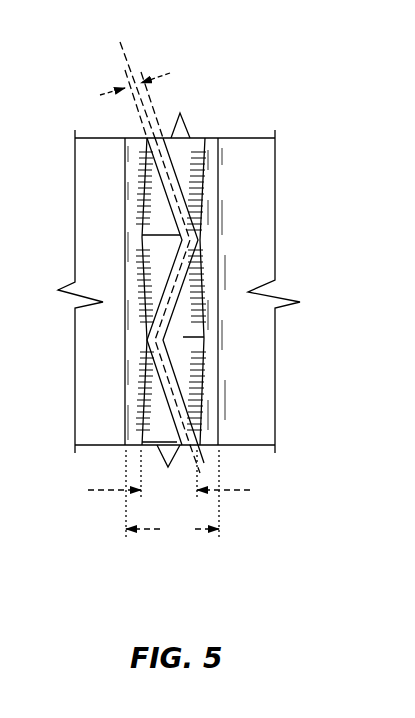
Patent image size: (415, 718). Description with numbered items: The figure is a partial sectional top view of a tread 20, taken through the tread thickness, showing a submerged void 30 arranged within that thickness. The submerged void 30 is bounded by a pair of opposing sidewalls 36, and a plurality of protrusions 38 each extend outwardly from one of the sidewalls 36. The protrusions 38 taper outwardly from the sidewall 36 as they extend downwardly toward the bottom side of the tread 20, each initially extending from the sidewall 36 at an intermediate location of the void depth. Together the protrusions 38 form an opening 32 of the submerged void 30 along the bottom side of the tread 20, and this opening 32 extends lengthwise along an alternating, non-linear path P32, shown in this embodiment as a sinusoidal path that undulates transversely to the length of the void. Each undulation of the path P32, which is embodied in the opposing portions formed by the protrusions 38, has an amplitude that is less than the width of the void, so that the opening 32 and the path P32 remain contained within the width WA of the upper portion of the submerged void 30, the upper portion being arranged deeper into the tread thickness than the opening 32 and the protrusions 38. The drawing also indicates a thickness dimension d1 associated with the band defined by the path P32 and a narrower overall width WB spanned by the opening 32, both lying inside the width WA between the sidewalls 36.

The tread 20 is at (276, 84).
The submerged void 30 is at (183, 157).
The opening 32 is at (181, 188).
The sidewall 36 is at (127, 208).
The protrusion 38 is at (158, 245).
The path P32 is at (122, 56).
The band thickness d1 is at (97, 98).
The width of upper portion WA is at (172, 503).
The width B WB is at (169, 482).